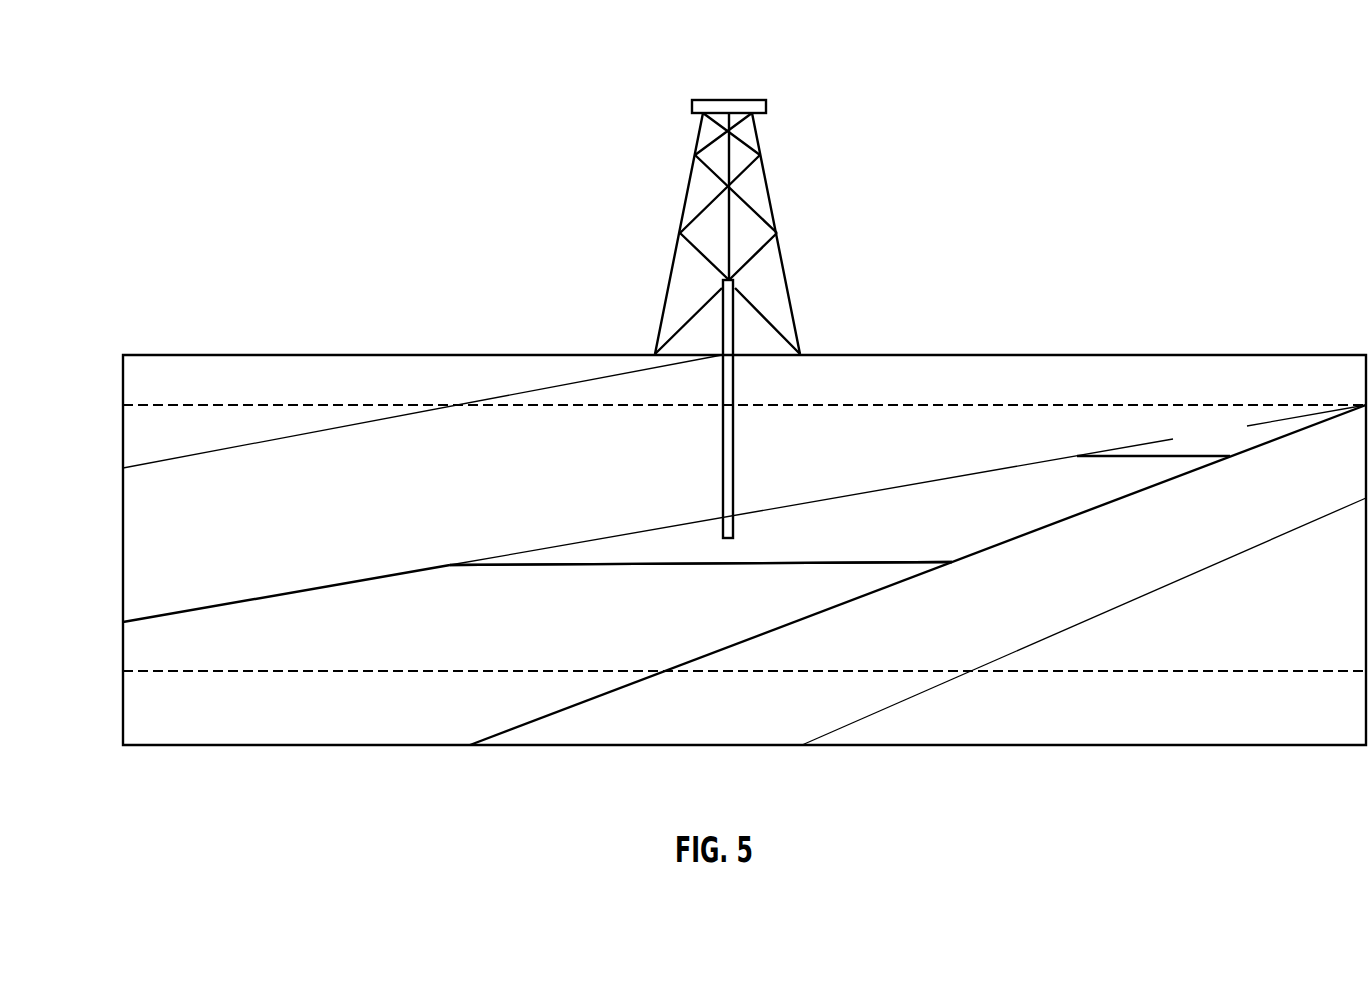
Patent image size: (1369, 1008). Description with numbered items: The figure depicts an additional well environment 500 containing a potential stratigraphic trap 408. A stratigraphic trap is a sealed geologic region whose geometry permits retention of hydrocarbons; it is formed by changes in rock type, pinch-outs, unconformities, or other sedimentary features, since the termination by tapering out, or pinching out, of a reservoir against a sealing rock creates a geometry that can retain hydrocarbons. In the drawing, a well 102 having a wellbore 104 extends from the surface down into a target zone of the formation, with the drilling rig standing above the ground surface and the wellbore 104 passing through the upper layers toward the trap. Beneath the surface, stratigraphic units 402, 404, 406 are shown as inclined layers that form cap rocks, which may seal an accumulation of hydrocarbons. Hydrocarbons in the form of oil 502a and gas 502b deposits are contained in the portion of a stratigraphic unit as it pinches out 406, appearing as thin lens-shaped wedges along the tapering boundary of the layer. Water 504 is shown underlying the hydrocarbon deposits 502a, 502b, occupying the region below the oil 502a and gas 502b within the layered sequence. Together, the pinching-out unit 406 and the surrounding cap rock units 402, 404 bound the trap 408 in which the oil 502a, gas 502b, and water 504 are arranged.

The well environment 500 is at (699, 401).
The well 102 is at (784, 268).
The wellbore 104 is at (734, 363).
The stratigraphic unit 402 is at (365, 396).
The stratigraphic unit 404 is at (365, 519).
The stratigraphic unit 406 is at (343, 673).
The stratigraphic trap 408 is at (122, 548).
The oil 502a is at (903, 546).
The gas 502b is at (1239, 448).
The water 504 is at (489, 656).